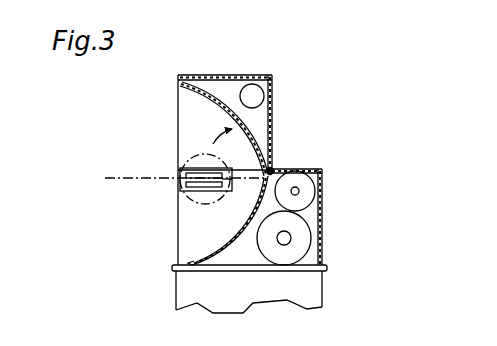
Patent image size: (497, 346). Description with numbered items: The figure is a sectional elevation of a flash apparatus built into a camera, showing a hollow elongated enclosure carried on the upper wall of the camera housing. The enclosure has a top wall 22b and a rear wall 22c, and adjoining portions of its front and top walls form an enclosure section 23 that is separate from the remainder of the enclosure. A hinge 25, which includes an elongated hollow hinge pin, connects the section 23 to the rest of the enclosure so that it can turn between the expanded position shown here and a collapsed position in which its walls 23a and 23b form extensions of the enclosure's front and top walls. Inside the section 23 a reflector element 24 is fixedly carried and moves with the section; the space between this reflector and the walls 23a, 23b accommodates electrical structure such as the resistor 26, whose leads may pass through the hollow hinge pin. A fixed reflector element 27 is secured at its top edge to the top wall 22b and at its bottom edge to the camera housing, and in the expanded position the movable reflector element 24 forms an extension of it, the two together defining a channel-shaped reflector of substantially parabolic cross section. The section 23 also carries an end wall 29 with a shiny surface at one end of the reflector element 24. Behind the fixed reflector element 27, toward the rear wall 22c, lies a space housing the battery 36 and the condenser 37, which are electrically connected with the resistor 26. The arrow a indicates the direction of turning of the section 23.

The top wall 22b is at (304, 169).
The rear wall 22c is at (323, 216).
The enclosure section 23 is at (246, 141).
The wall of the section 23a is at (211, 75).
The wall of the section 23b is at (273, 93).
The reflector element 24 is at (244, 124).
The hinge 25 is at (272, 168).
The resistor 26 is at (250, 85).
The fixed reflector element 27 is at (231, 243).
The end wall 29 is at (179, 125).
The battery 36 is at (298, 245).
The condenser 37 is at (306, 188).
The direction of movement a is at (216, 131).